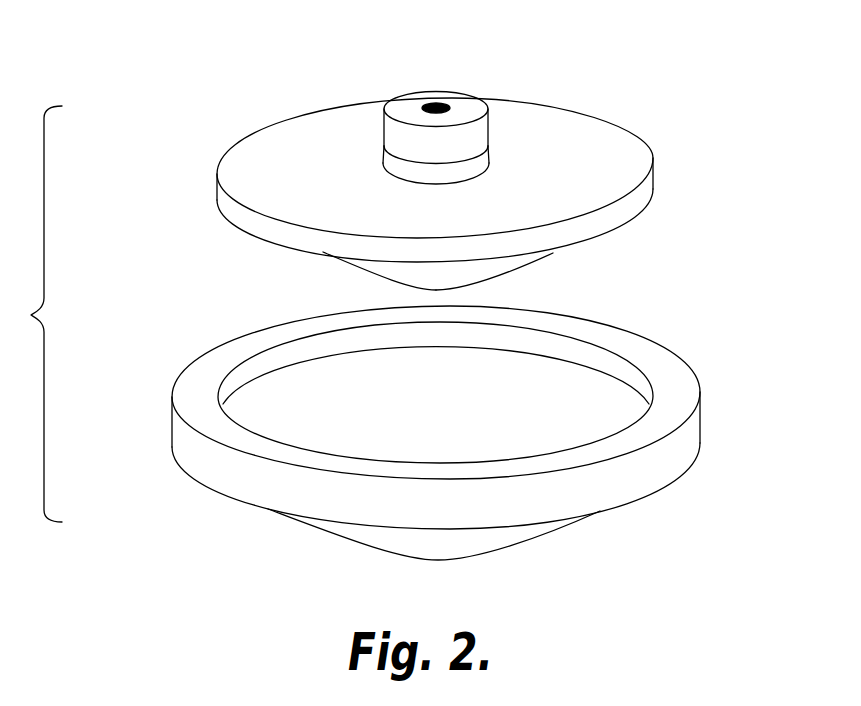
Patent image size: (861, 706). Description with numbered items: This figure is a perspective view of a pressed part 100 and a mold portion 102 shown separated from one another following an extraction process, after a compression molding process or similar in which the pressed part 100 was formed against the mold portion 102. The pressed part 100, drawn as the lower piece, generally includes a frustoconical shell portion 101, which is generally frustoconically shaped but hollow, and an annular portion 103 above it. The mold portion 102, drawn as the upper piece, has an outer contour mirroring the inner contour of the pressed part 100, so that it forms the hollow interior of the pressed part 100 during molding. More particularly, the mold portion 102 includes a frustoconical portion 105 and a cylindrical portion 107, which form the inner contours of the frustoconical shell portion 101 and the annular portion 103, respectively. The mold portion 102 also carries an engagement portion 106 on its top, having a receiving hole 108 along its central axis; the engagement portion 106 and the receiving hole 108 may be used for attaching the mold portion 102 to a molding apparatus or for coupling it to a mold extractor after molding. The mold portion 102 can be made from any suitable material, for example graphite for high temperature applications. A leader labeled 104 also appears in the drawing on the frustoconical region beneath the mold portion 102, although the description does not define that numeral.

The pressed part 100 is at (188, 441).
The frustoconical shell portion 101 is at (373, 537).
The mold portion 102 is at (547, 130).
The annular portion 103 is at (687, 442).
The conical portion 104 is at (390, 268).
The frustoconical portion 105 is at (495, 267).
The engagement portion 106 is at (396, 130).
The cylindrical portion 107 is at (647, 200).
The receiving hole 108 is at (440, 103).